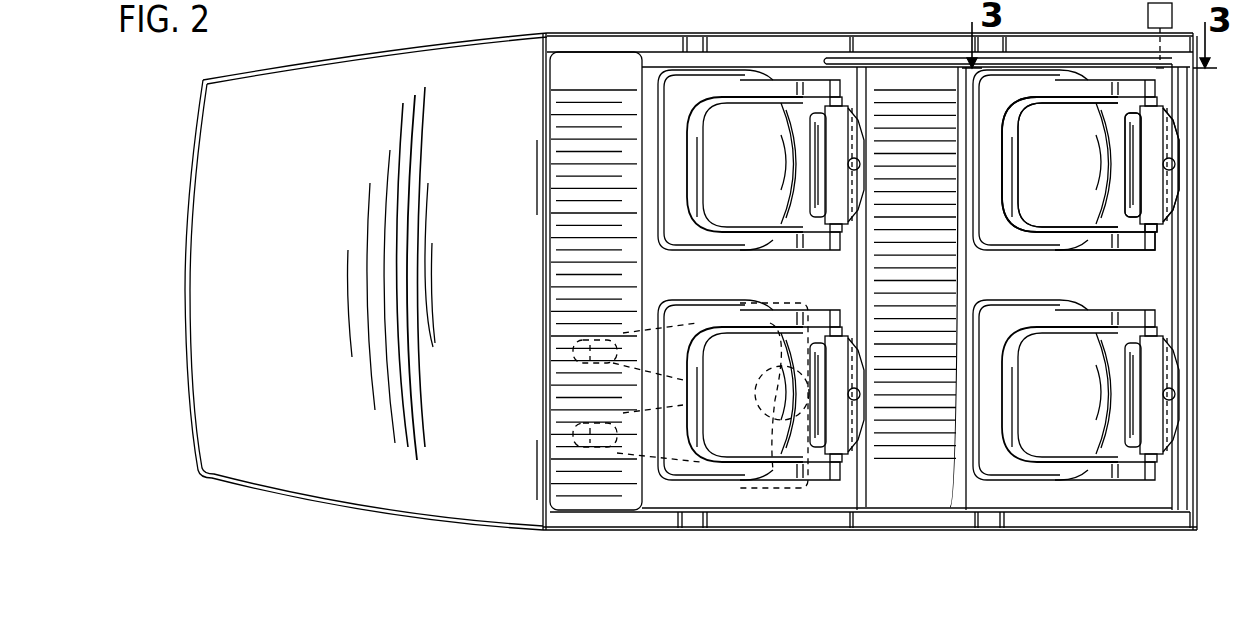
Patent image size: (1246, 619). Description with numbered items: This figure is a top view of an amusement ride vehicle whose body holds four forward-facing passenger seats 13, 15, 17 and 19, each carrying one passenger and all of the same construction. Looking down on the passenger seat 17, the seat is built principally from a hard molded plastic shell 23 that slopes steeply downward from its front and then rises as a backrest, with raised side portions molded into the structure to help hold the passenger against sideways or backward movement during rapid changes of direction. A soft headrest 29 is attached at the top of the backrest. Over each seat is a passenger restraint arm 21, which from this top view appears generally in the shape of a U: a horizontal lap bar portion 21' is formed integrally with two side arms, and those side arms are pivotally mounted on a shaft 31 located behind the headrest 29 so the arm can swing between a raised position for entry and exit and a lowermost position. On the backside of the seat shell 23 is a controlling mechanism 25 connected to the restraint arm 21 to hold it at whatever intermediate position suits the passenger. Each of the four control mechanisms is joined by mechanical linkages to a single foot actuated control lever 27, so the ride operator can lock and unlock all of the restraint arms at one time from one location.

The passenger seat 13 is at (700, 258).
The passenger seat 15 is at (702, 290).
The passenger seat 17 is at (1016, 259).
The passenger seat 19 is at (1018, 287).
The passenger restraint arm 21 is at (1068, 169).
The horizontal lap bar portion 21' is at (1060, 164).
The hard molded plastic shell 23 is at (1080, 172).
The controlling mechanism 25 is at (1178, 148).
The foot actuated control lever 27 is at (1148, 14).
The soft headrest 29 is at (1132, 127).
The shaft 31 is at (1153, 223).